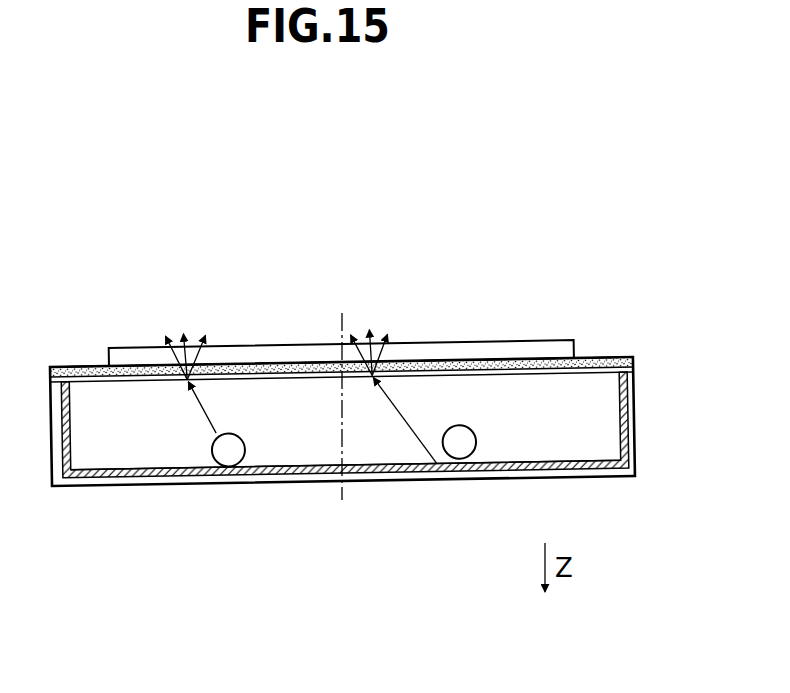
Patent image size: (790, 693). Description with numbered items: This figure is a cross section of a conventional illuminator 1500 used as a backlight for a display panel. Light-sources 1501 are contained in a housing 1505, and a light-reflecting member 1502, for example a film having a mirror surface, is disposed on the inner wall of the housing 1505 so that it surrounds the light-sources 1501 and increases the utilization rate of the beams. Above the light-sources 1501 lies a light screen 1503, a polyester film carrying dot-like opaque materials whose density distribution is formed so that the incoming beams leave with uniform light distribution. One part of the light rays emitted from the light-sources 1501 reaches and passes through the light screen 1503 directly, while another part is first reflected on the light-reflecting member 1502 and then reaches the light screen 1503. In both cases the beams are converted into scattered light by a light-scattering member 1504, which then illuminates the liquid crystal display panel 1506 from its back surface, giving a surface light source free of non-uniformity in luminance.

The backlight device 1500 is at (600, 480).
The light-sources 1501 is at (201, 469).
The light-reflecting member 1502 is at (302, 466).
The light screen 1503 is at (595, 367).
The light-scattering member 1504 is at (81, 367).
The housing 1505 is at (629, 412).
The liquid crystal display panel 1506 is at (490, 357).